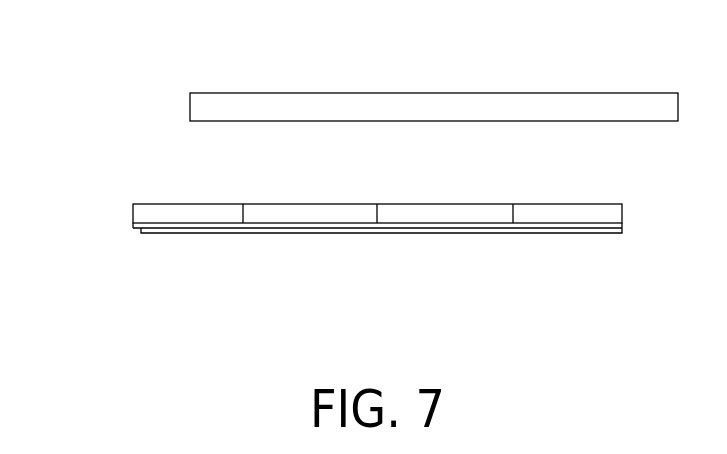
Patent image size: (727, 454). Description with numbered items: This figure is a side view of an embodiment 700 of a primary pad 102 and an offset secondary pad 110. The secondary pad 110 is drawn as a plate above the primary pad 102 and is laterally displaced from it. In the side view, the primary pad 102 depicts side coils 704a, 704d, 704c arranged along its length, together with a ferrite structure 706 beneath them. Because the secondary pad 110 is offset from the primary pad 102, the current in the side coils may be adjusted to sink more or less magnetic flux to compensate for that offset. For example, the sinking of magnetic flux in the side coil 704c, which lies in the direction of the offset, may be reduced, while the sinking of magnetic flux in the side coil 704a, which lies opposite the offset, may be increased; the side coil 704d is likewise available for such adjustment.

The embodiment 700 is at (122, 36).
The secondary pad 110 is at (432, 93).
The primary pad 102 is at (139, 179).
The side coil 704a is at (143, 228).
The side coil 704d is at (480, 223).
The side coil 704c is at (592, 223).
The ferrite structure 706 is at (233, 232).